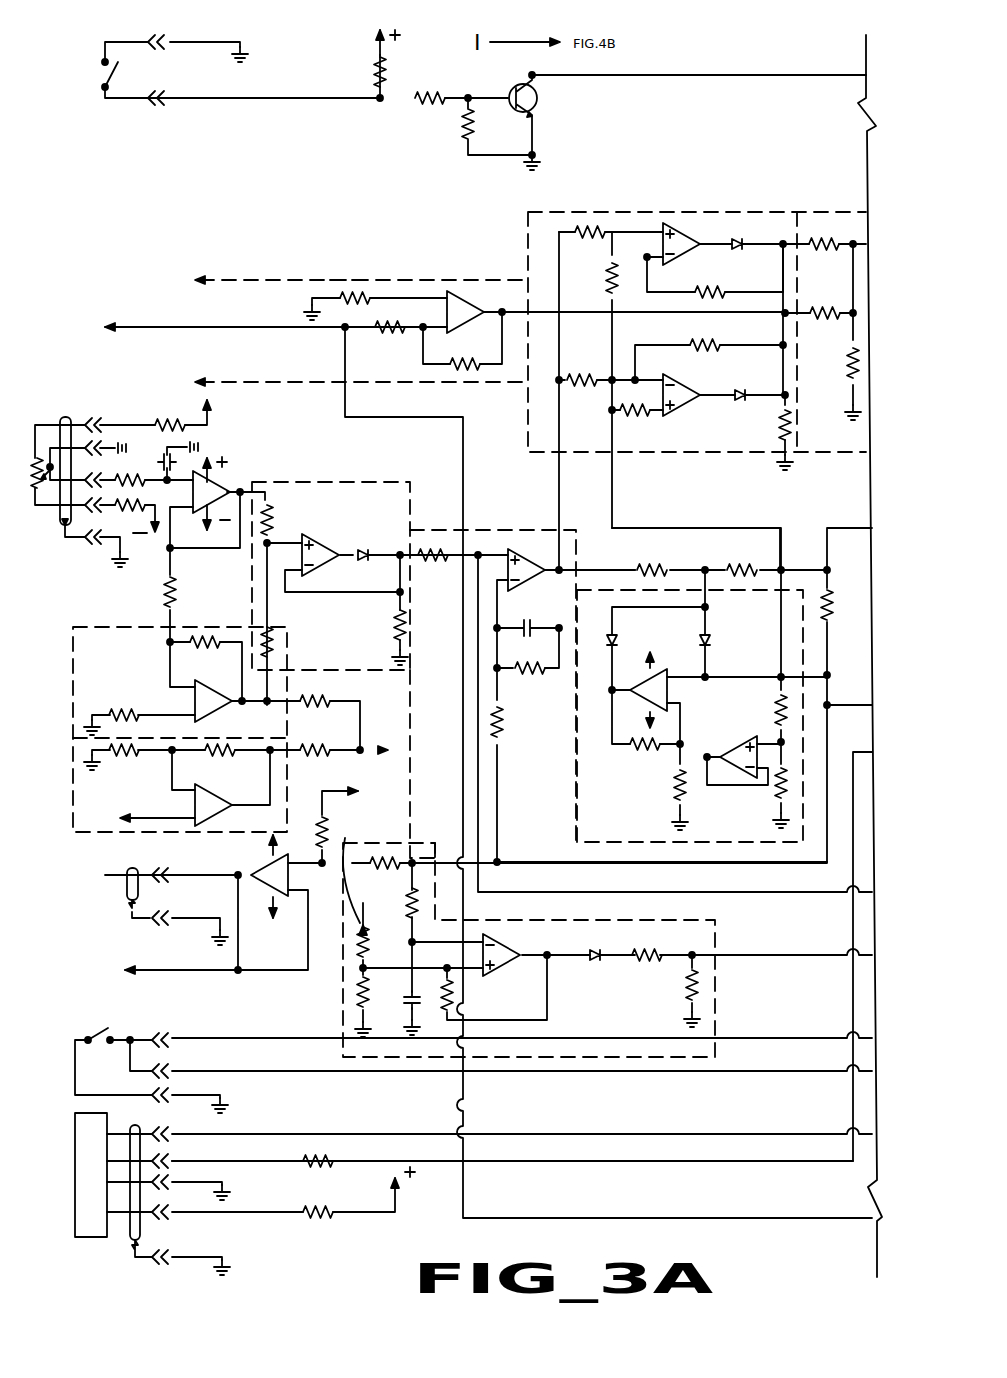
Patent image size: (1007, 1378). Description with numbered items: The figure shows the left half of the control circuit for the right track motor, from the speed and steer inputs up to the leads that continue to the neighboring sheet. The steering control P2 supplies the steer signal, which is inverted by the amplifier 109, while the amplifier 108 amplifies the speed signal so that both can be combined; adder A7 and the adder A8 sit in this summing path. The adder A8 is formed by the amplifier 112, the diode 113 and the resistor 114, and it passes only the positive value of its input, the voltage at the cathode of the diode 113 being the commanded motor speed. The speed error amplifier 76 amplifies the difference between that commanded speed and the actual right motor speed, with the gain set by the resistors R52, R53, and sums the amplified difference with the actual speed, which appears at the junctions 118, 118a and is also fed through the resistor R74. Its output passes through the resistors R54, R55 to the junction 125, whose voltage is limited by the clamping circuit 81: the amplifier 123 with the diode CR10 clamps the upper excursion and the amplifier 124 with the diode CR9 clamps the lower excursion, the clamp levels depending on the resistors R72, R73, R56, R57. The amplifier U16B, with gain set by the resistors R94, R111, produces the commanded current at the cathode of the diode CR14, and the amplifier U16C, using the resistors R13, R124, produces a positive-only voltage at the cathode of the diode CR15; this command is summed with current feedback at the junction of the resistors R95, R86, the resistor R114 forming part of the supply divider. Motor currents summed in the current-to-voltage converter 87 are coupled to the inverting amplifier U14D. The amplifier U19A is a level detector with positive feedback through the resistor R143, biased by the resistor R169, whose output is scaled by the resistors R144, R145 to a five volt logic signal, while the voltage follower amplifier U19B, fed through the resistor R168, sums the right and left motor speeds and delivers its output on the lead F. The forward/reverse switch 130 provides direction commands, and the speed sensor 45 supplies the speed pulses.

The current-to-voltage converter 87 is at (320, 282).
The inverting amplifier U14D is at (465, 292).
The resistor R111 is at (604, 276).
The diode CR14 is at (734, 244).
The amplifier U16B is at (690, 262).
The resistor R95 is at (819, 252).
The resistor R94 is at (717, 308).
The resistor R13 is at (690, 343).
The resistor R86 is at (820, 319).
The amplifier U16C is at (700, 385).
The resistor R114 is at (848, 380).
The diode CR15 is at (740, 400).
The resistor R124 is at (590, 400).
The adder A8 is at (353, 486).
The amplifier 112 is at (333, 544).
The diode 113 is at (365, 562).
The resistor 114 is at (395, 624).
The speed error amplifier 76 is at (478, 530).
The resistor R54 is at (648, 564).
The junction 125 is at (700, 568).
The resistor R55 is at (762, 564).
The resistor R74 is at (828, 588).
The diode CR10 is at (615, 638).
The diode CR9 is at (710, 640).
The amplifier 123 is at (642, 686).
The junction 118 is at (830, 675).
The resistor R56 is at (781, 685).
The amplifier 124 is at (733, 752).
The resistor R53 is at (545, 670).
The resistor R52 is at (530, 735).
The resistor R72 is at (647, 746).
The resistor R73 is at (676, 795).
The resistor R57 is at (779, 795).
The clamping circuit 81 is at (577, 800).
The junction 118a is at (500, 865).
The amplifier 109 is at (195, 702).
The amplifier 108 is at (205, 787).
The adder A7 is at (263, 834).
The steering control P2 is at (40, 493).
The voltage follower amplifier U19B is at (178, 904).
The lead F is at (143, 973).
The resistor R168 is at (363, 825).
The resistor R169 is at (355, 992).
The level detector amplifier U19A is at (502, 948).
The resistor R143 is at (455, 999).
The resistor R144 is at (642, 962).
The resistor R145 is at (690, 1002).
The forward/reverse switch 130 is at (104, 1030).
The speed sensor 45 is at (77, 1238).